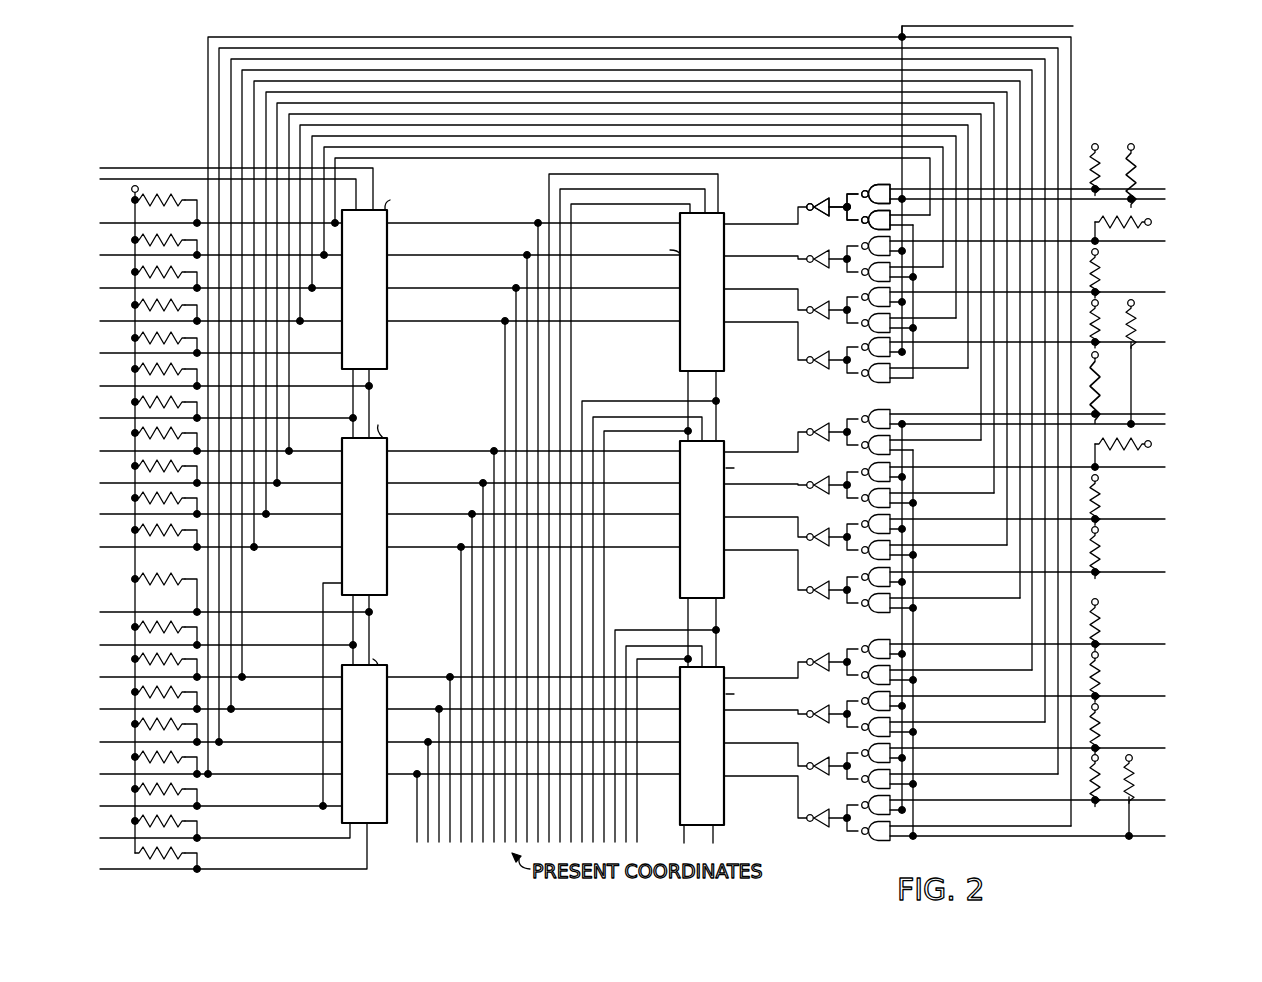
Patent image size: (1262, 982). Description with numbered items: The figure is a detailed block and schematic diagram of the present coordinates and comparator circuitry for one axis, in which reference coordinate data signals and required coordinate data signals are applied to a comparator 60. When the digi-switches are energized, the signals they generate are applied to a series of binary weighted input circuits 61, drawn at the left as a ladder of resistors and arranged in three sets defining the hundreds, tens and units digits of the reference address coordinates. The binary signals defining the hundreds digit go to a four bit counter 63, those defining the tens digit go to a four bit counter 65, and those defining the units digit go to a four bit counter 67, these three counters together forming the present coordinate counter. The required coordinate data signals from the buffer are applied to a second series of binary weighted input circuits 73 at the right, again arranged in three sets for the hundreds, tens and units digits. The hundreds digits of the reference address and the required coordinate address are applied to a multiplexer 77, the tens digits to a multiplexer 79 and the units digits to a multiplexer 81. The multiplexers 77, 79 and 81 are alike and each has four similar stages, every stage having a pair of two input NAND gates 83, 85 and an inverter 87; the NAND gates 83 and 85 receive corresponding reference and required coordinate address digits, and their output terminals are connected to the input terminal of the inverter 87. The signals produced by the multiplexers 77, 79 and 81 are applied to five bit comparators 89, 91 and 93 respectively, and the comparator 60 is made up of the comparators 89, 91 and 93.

The comparator 60 is at (1122, 103).
The binary weighted input circuits 61 is at (183, 148).
The four bit counter 63 is at (388, 352).
The four bit counter 65 is at (388, 583).
The four bit counter 67 is at (382, 823).
The binary weighted input circuits 73 is at (1180, 510).
The multiplexer 77 is at (797, 361).
The multiplexer 79 is at (795, 591).
The multiplexer 81 is at (785, 806).
The NAND gate 83 is at (862, 188).
The NAND gate 85 is at (862, 232).
The inverter 87 is at (812, 205).
The 5 bit comparator 89 is at (680, 350).
The 5 bit comparator 91 is at (680, 585).
The 5 bit comparator 93 is at (678, 808).